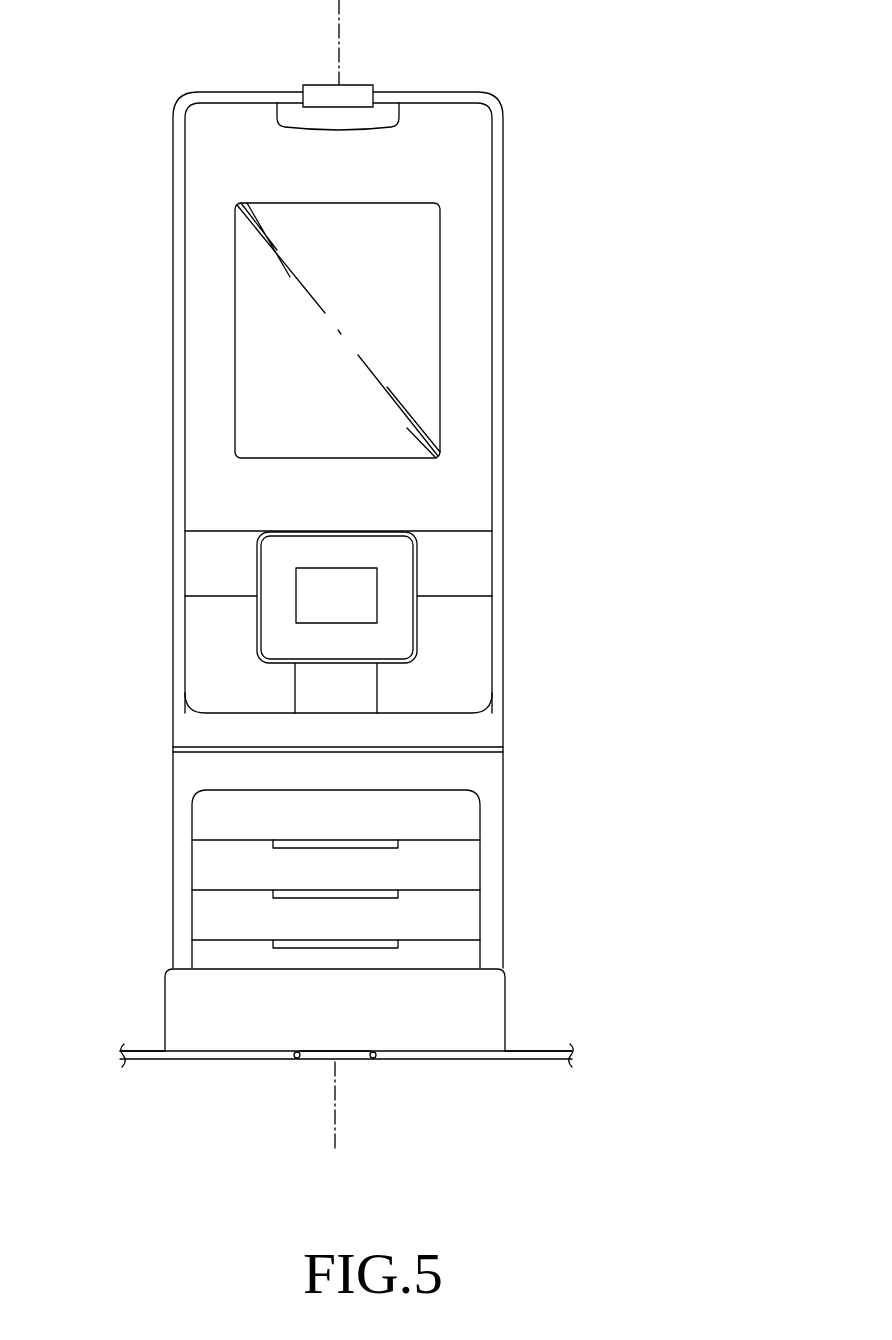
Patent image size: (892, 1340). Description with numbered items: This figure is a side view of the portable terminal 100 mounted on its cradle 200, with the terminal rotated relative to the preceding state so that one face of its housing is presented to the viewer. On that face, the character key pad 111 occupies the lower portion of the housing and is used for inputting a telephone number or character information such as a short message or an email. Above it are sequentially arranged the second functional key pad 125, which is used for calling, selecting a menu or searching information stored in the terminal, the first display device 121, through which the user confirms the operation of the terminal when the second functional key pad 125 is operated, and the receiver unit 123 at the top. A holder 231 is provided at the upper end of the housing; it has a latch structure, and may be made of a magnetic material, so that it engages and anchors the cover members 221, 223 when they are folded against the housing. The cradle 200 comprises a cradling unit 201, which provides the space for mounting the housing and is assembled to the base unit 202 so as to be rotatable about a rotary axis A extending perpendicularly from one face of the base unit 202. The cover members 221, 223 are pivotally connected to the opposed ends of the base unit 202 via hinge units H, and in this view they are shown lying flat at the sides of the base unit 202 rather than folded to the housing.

The portable terminal 100 is at (532, 205).
The holder 231 is at (353, 93).
The receiver unit 123 is at (303, 115).
The first display device 121 is at (277, 312).
The second functional key pad 125 is at (354, 595).
The character key pad 111 is at (432, 817).
The cradling unit 201 is at (440, 1003).
The cradle 200 is at (270, 1078).
The base unit 202 is at (357, 1060).
The cover member 221 is at (523, 1060).
The cover member 223 is at (150, 1060).
The hinge unit H is at (297, 1062).
The rotary axis A is at (339, 12).